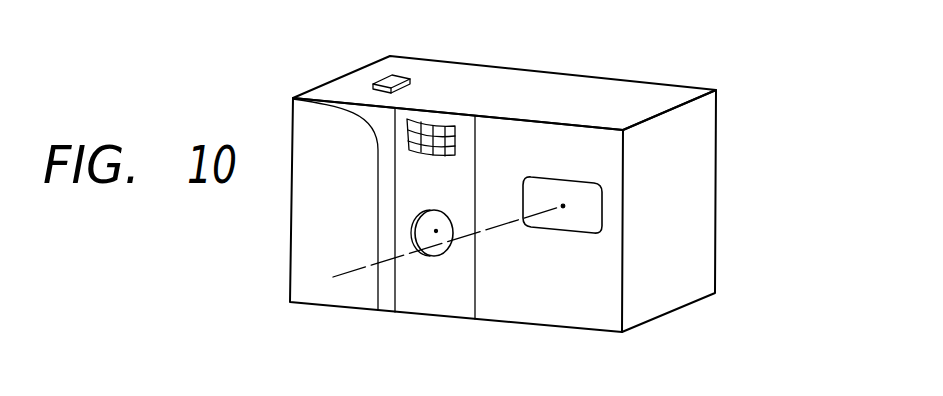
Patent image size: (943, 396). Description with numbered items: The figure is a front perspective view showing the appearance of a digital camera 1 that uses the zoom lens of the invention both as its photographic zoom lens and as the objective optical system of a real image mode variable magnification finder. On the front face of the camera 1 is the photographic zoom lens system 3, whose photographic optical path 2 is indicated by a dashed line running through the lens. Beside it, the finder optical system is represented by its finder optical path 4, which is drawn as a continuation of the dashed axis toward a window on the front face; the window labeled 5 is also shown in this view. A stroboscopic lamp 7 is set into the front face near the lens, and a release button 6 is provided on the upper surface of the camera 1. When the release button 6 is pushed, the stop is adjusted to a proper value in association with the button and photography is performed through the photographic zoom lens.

The digital camera 1 is at (718, 267).
The photographic optical path 2 is at (353, 270).
The photographic zoom lens system 3 is at (443, 258).
The finder optical path 4 is at (493, 238).
The finder window 5 is at (598, 202).
The release button 6 is at (382, 78).
The stroboscopic lamp 7 is at (428, 121).